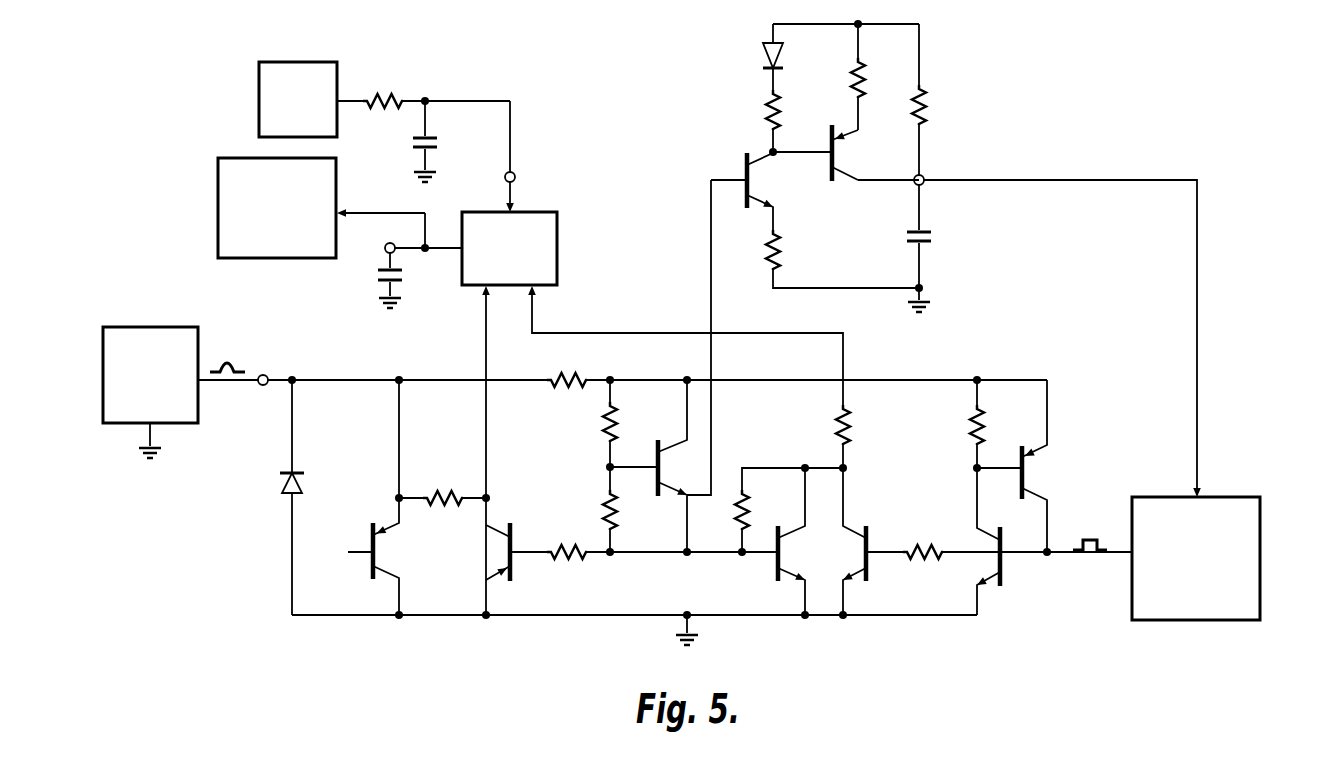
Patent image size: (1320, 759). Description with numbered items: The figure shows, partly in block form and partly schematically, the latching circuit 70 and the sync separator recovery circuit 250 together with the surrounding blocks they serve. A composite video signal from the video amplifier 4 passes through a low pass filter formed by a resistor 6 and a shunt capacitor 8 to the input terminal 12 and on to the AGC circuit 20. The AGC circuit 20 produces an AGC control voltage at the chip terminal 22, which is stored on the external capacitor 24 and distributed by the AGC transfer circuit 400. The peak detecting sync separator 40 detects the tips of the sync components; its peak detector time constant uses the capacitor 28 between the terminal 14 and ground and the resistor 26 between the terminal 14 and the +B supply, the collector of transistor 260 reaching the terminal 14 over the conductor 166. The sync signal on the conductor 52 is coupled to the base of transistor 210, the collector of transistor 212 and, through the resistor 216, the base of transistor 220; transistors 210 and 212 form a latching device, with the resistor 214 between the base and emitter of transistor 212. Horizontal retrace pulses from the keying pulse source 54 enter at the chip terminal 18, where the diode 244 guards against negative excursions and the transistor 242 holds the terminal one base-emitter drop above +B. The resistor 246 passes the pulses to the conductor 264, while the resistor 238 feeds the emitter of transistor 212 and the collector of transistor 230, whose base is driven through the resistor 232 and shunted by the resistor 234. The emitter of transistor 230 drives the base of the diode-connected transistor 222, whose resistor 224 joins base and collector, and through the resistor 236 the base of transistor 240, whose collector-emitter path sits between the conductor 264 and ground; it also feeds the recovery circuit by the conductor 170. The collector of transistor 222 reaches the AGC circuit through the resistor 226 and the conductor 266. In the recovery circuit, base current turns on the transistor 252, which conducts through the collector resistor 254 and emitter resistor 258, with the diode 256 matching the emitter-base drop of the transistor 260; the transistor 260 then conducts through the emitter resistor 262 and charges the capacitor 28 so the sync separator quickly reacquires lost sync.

The video amplifier 4 is at (259, 97).
The resistor 6 is at (383, 98).
The shunt capacitor 8 is at (436, 137).
The input terminal 12 is at (514, 181).
The terminal 14 is at (923, 177).
The chip terminal 18 is at (265, 374).
The AGC circuit 20 is at (557, 248).
The chip terminal 22 is at (389, 244).
The external capacitor 24 is at (382, 282).
The resistor 26 is at (928, 100).
The capacitor 28 is at (930, 232).
The peak detecting sync separator 40 is at (1155, 496).
The conductor 52 is at (1088, 562).
The keying pulse source 54 is at (152, 319).
The latching circuit 70 is at (772, 426).
The conductor 166 is at (868, 182).
The conductor 170 is at (711, 311).
The transistor 210 is at (1002, 574).
The transistor 212 is at (1026, 480).
The resistor 214 is at (969, 431).
The resistor 216 is at (922, 543).
The transistor 220 is at (860, 550).
The transistor 222 is at (770, 566).
The resistor 224 is at (750, 505).
The resistor 226 is at (852, 418).
The transistor 230 is at (660, 462).
The resistor 232 is at (603, 435).
The resistor 234 is at (598, 500).
The resistor 236 is at (568, 564).
The resistor 238 is at (569, 394).
The transistor 240 is at (505, 548).
The transistor 242 is at (375, 548).
The diode 244 is at (284, 486).
The resistor 246 is at (455, 492).
The sync separator recovery circuit 250 is at (866, 241).
The transistor 252 is at (753, 169).
The collector resistor 254 is at (763, 111).
The diode 256 is at (766, 61).
The emitter resistor 258 is at (785, 254).
The transistor 260 is at (838, 157).
The emitter resistor 262 is at (848, 68).
The conductor 264 is at (484, 320).
The conductor 266 is at (535, 320).
The AGC transfer circuit 400 is at (218, 209).